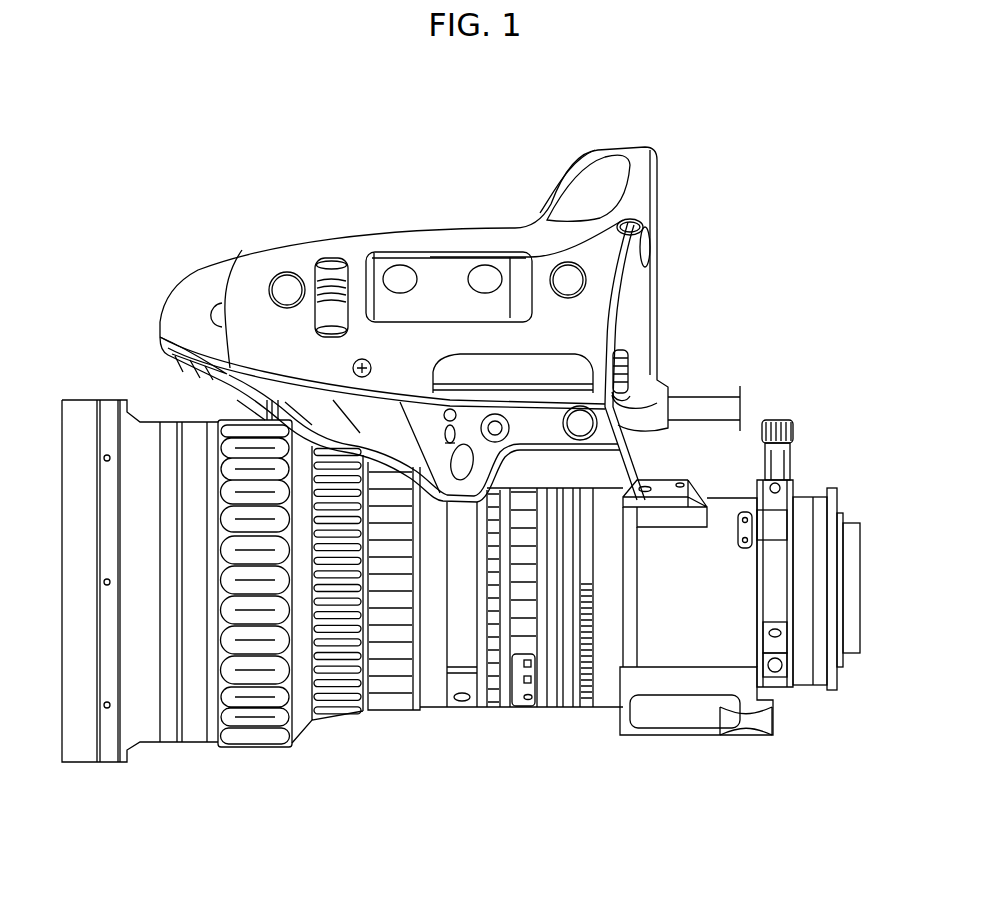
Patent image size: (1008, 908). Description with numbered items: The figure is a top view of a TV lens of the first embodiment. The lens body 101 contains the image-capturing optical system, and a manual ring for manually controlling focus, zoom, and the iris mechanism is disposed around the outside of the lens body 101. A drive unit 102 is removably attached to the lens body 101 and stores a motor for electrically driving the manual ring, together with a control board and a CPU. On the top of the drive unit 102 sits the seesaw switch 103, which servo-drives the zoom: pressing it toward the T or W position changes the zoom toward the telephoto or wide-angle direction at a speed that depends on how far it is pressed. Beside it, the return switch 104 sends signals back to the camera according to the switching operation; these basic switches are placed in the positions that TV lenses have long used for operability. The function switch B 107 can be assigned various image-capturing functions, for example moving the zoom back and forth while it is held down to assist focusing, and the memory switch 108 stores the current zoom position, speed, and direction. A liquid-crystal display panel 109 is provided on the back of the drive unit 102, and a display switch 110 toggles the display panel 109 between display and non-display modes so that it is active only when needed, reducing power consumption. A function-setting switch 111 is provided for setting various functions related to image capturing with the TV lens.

The lens body 101 is at (467, 708).
The drive unit 102 is at (218, 272).
The seesaw switch 103 is at (445, 268).
The return switch 104 is at (555, 266).
The function switch B 107 is at (597, 424).
The memory switch 108 is at (640, 474).
The liquid-crystal display panel 109 is at (637, 328).
The display switch 110 is at (628, 371).
The function-setting switch 111 is at (650, 233).